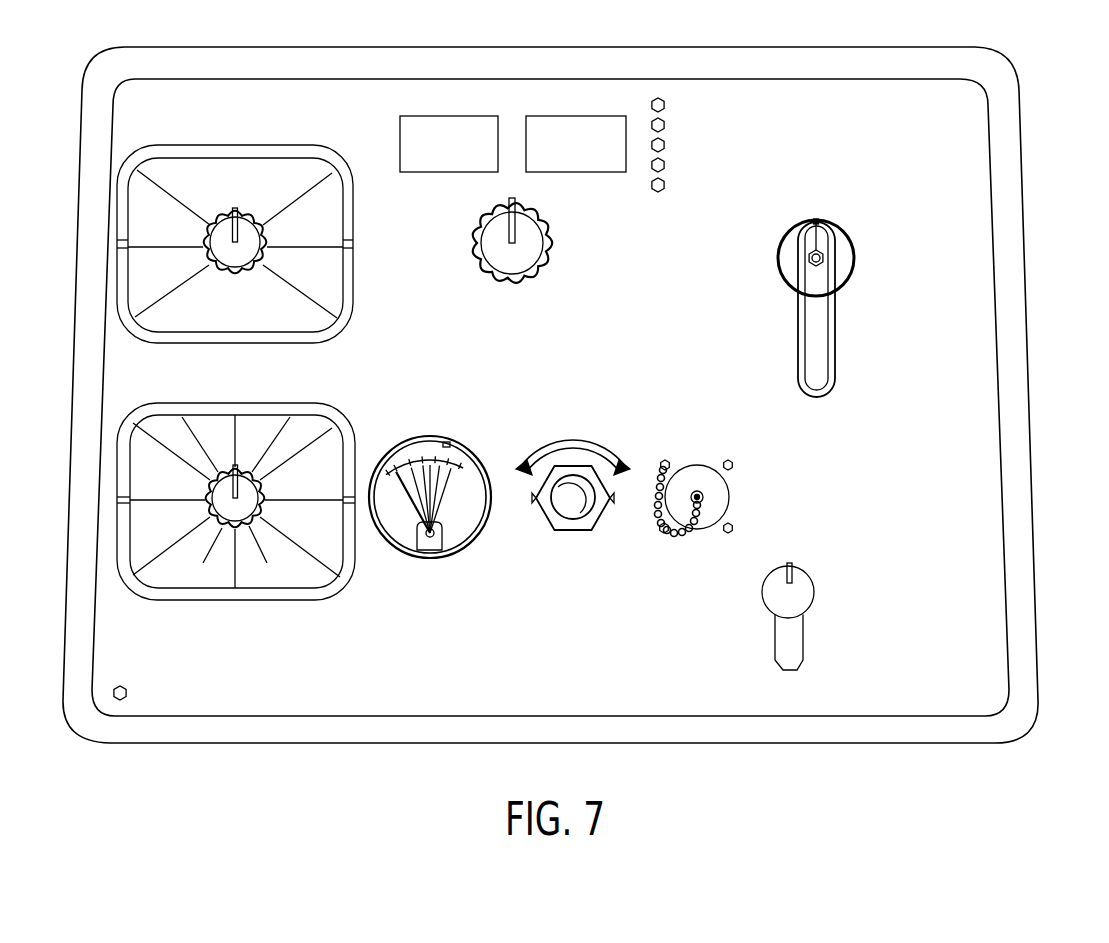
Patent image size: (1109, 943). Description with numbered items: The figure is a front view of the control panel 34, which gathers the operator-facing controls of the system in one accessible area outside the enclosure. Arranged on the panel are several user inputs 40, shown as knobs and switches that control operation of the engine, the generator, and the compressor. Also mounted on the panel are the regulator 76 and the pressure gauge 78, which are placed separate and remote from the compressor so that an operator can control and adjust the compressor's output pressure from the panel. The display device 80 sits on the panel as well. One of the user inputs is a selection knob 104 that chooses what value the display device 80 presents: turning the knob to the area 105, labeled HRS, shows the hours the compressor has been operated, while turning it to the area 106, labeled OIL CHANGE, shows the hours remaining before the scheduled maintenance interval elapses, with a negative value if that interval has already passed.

The control panel 34 is at (1036, 60).
The user inputs 40 is at (250, 272).
The regulator 76 is at (602, 513).
The pressure gauge 78 is at (430, 438).
The display device 80 is at (476, 116).
The selection knob 104 is at (263, 512).
The area labeled HRS 105 is at (225, 548).
The area labeled OIL CHANGE 106 is at (202, 538).